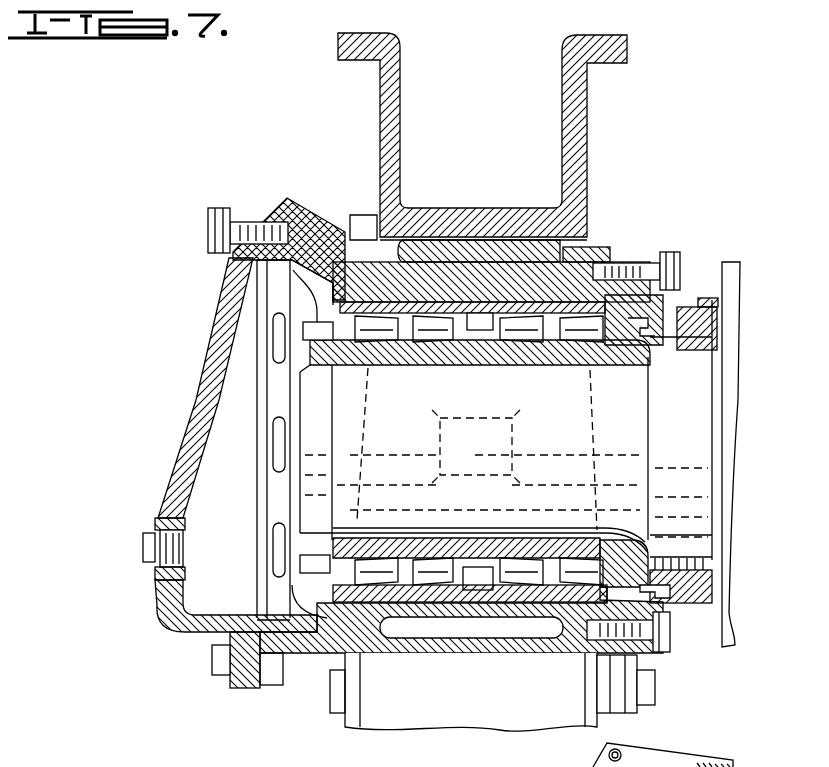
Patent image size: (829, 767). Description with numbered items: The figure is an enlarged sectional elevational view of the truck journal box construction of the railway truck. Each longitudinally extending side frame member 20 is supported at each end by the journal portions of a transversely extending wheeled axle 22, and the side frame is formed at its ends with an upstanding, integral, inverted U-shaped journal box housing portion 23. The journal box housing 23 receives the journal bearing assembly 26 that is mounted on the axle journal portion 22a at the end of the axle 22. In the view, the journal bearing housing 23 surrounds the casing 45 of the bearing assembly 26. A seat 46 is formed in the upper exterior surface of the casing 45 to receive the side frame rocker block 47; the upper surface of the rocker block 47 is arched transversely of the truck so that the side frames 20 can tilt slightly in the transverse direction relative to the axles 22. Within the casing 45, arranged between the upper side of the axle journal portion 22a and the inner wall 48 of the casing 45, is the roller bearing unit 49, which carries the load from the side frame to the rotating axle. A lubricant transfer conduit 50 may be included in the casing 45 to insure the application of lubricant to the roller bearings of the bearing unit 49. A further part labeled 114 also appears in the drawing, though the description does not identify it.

The side frame member 20 is at (596, 108).
The wheeled axle 22 is at (720, 358).
The axle journal portion 22a is at (508, 518).
The journal box housing portion 23 is at (423, 236).
The journal bearing assembly 26 is at (197, 381).
The casing 45 is at (337, 252).
The seat 46 is at (556, 287).
The rocker block 47 is at (513, 245).
The inner wall 48 is at (562, 298).
The roller bearing unit 49 is at (449, 362).
The lubricant transfer conduit 50 is at (428, 238).
The torque plate 114 is at (748, 766).